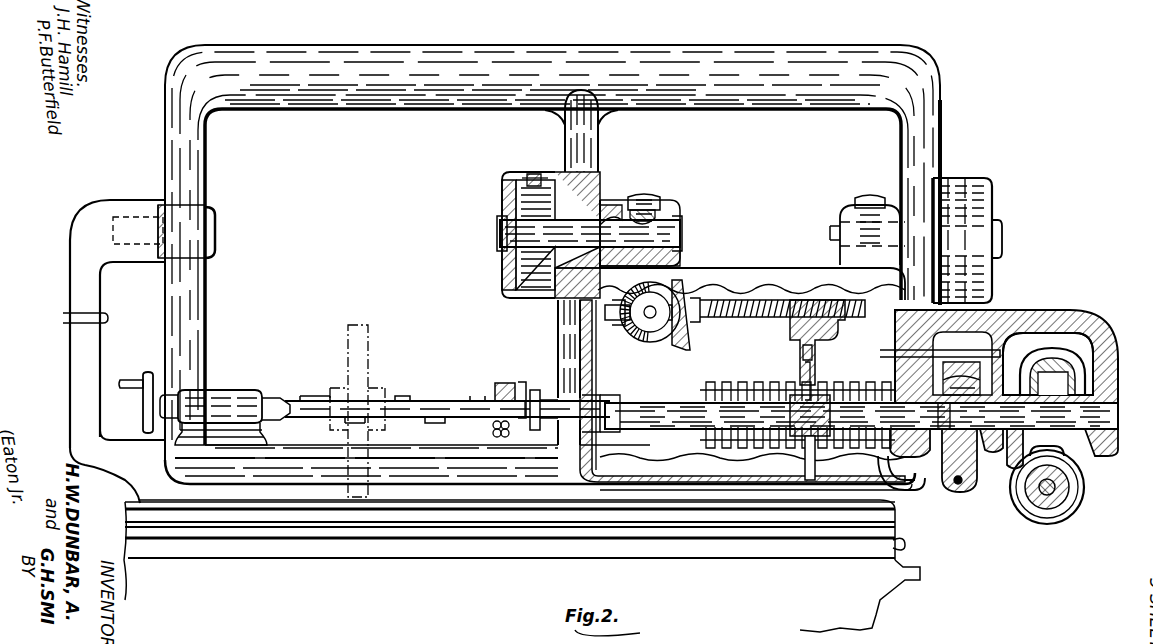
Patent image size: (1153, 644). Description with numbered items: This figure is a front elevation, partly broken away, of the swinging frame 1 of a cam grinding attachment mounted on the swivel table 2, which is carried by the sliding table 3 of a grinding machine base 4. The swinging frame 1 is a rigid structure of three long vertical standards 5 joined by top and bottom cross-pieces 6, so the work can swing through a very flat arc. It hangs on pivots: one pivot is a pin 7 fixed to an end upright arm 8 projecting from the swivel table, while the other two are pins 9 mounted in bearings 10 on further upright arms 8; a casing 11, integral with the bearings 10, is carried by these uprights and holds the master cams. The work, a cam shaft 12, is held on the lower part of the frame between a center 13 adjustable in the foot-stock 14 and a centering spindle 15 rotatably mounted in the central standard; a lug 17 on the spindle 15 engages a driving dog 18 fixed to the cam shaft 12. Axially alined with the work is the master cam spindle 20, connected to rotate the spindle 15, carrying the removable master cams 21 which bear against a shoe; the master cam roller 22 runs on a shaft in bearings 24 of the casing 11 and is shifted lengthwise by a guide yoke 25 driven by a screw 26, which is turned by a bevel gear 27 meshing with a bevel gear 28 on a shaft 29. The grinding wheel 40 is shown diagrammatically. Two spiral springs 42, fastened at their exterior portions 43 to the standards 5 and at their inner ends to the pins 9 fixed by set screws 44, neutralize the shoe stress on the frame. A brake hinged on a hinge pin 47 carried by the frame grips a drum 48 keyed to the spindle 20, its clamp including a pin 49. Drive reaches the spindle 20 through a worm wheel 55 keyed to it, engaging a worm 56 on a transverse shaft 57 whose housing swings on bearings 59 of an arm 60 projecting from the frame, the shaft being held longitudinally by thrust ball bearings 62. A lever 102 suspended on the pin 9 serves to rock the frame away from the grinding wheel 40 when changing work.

The swinging frame 1 is at (432, 62).
The swivel table 2 is at (290, 497).
The sliding table 3 is at (498, 480).
The grinding machine base 4 is at (970, 255).
The vertical standards 5 is at (185, 163).
The cross-pieces 6 is at (415, 100).
The pin 7 is at (213, 241).
The upright arm 8 is at (75, 340).
The pins 9 is at (675, 225).
The bearings 10 is at (662, 212).
The casing 11 is at (770, 272).
The cam shaft 12 is at (452, 403).
The center 13 is at (272, 397).
The foot-stock 14 is at (238, 392).
The centering spindle 15 is at (544, 395).
The lug 17 is at (522, 388).
The driving dog 18 is at (510, 395).
The master cam spindle 20 is at (1108, 415).
The master cams 21 is at (752, 380).
The master cam roller 22 is at (810, 475).
The bearings 24 is at (600, 430).
The guide yoke 25 is at (830, 335).
The screw 26 is at (755, 308).
The bevel gear 27 is at (692, 340).
The bevel gear 28 is at (633, 340).
The shaft 29 is at (650, 320).
The grinding wheel 40 is at (358, 325).
The spiral springs 42 is at (520, 208).
The exterior portions 43 is at (532, 178).
The set screws 44 is at (645, 195).
The hinge pin 47 is at (1005, 312).
The drum 48 is at (977, 456).
The pin 49 is at (958, 485).
The worm wheel 55 is at (1090, 365).
The worm 56 is at (1072, 493).
The transverse shaft 57 is at (1058, 498).
The bearings 59 is at (1090, 390).
The arm 60 is at (1082, 322).
The thrust ball bearings 62 is at (1085, 480).
The lever 102 is at (606, 205).